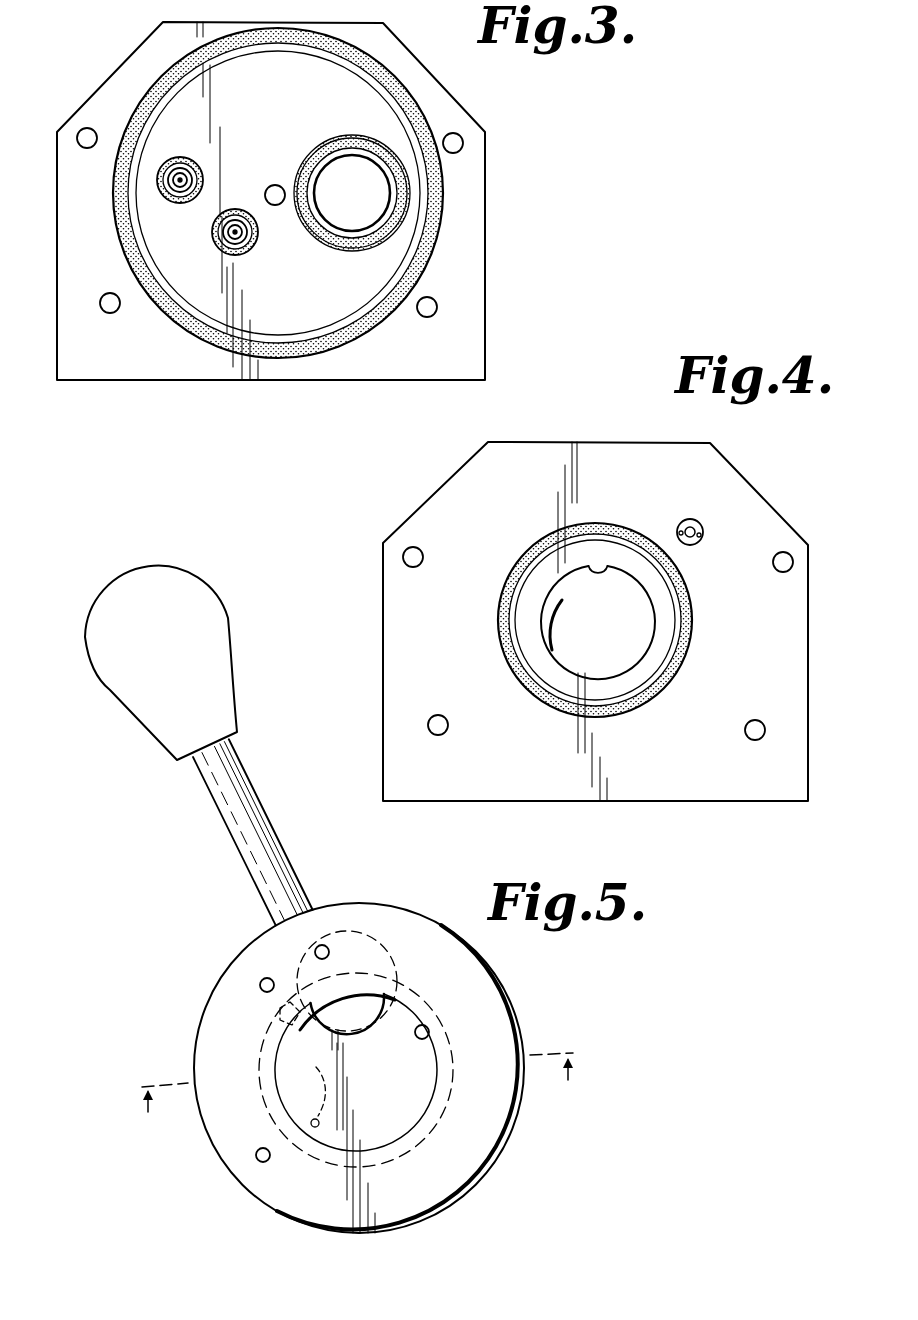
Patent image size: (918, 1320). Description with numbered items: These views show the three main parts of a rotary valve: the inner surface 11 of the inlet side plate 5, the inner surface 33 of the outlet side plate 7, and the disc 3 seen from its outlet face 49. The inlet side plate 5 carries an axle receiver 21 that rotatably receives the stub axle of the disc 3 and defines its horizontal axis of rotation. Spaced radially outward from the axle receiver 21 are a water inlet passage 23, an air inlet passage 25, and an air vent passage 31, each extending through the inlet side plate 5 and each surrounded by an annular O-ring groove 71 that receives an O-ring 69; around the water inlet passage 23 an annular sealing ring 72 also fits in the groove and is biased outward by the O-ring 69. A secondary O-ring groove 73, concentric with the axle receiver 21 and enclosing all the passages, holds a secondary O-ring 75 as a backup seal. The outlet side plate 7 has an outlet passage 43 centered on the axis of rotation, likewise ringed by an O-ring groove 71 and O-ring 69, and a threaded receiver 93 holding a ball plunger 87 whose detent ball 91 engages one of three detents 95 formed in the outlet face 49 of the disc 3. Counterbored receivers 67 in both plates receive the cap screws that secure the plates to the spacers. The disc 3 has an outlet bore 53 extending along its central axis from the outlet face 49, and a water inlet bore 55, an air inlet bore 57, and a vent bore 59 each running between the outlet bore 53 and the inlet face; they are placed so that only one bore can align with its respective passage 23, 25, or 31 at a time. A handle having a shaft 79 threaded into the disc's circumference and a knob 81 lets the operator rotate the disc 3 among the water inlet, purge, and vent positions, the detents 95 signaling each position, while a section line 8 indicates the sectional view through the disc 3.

In FIG. 5, the disc 3 is at (190, 1161).
In FIG. 3, the inlet side plate 5 is at (72, 391).
In FIG. 4, the outlet side plate 7 is at (376, 808).
In FIG. 5, the section line 8 is at (363, 1095).
In FIG. 3, the inner surface 11 is at (461, 278).
In FIG. 3, the axle receiver 21 is at (275, 186).
In FIG. 3, the water inlet passage 23 is at (345, 163).
In FIG. 3, the air inlet passage 25 is at (177, 188).
In FIG. 3, the air vent passage 31 is at (240, 237).
In FIG. 4, the inner surface 33 is at (760, 677).
In FIG. 4, the outlet passage 43 is at (610, 565).
In FIG. 5, the outlet face 49 is at (334, 1209).
In FIG. 5, the outlet bore 53 is at (428, 1036).
In FIG. 5, the water inlet bore 55 is at (374, 1008).
In FIG. 5, the air inlet bore 57 is at (275, 1024).
In FIG. 5, the vent bore 59 is at (308, 1089).
In FIG. 3, the counterbored receivers 67 is at (462, 149).
In FIG. 4, the counterbored receivers 67 is at (775, 571).
In FIG. 3, the O-ring 69 is at (213, 219).
In FIG. 4, the O-ring 69 is at (655, 704).
In FIG. 3, the O-ring groove 71 is at (223, 214).
In FIG. 4, the O-ring groove 71 is at (596, 558).
In FIG. 3, the annular sealing ring 72 is at (305, 242).
In FIG. 3, the secondary O-ring groove 73 is at (312, 50).
In FIG. 3, the secondary O-ring 75 is at (254, 40).
In FIG. 5, the shaft 79 is at (236, 847).
In FIG. 5, the knob 81 is at (113, 692).
In FIG. 4, the ball plunger 87 is at (684, 520).
In FIG. 4, the detent ball 91 is at (699, 525).
In FIG. 4, the threaded receiver 93 is at (695, 547).
In FIG. 5, the detents 95 is at (267, 978).